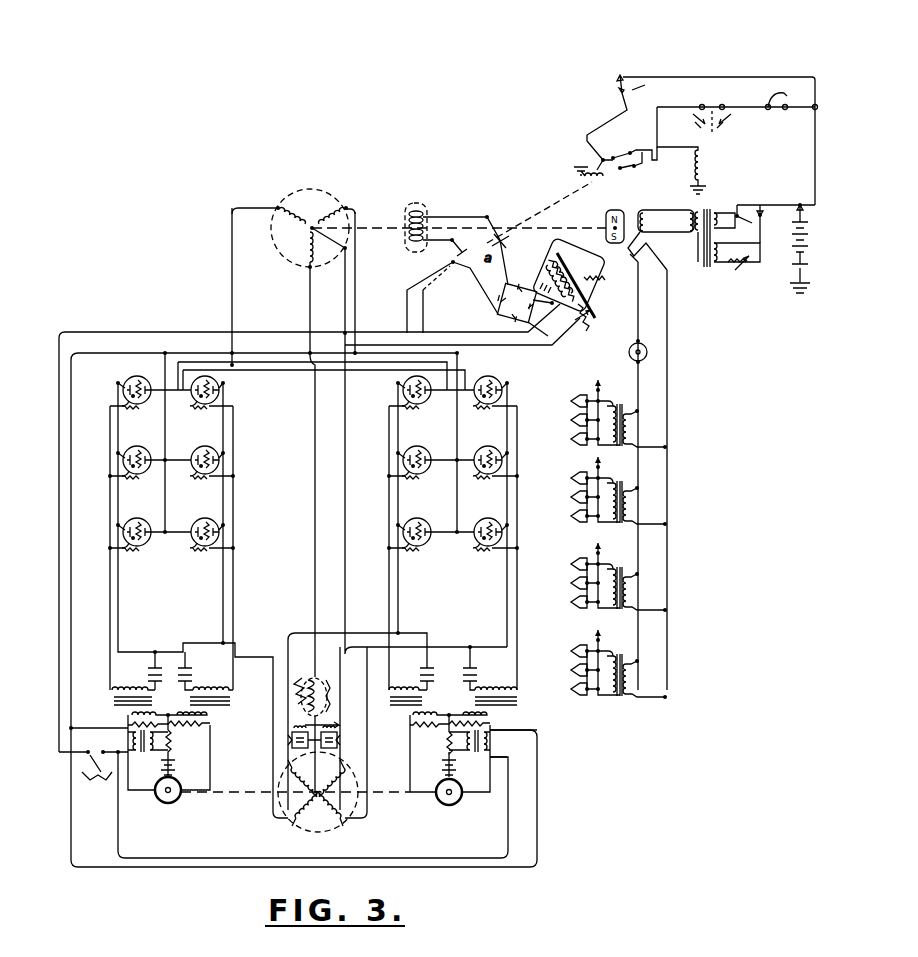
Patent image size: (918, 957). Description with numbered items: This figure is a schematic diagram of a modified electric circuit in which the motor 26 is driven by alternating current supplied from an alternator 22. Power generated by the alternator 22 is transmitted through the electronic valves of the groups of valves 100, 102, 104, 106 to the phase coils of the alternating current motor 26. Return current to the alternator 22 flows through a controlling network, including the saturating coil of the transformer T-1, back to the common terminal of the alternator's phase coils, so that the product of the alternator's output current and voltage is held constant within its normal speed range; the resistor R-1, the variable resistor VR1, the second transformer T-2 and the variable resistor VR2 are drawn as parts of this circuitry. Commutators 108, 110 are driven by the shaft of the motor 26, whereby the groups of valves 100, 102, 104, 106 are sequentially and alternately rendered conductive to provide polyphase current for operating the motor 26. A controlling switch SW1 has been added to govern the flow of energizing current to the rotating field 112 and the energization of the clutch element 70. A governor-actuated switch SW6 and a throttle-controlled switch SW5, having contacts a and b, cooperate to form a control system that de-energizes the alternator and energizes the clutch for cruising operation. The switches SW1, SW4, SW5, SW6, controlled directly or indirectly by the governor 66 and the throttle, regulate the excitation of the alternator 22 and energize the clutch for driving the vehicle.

The alternator 22 is at (333, 196).
The rotating field 112 is at (429, 207).
The throttle-controlled switch SW5 is at (790, 125).
The governor-actuated switch SW6 is at (720, 100).
The governor 66 is at (697, 126).
The clutch element 70 is at (706, 158).
The controlling switch SW1 is at (612, 185).
The transformer T-1 is at (606, 296).
The resistor R-1 is at (590, 269).
The variable resistor VR1 is at (582, 331).
The transformer T-2 is at (700, 268).
The variable resistor VR2 is at (751, 271).
The switch SW4 is at (759, 224).
The group of valves 100 is at (135, 563).
The group of valves 102 is at (203, 563).
The group of valves 104 is at (415, 563).
The group of valves 106 is at (486, 563).
The commutator 108 is at (172, 803).
The commutator 110 is at (452, 805).
The motor 26 is at (330, 826).